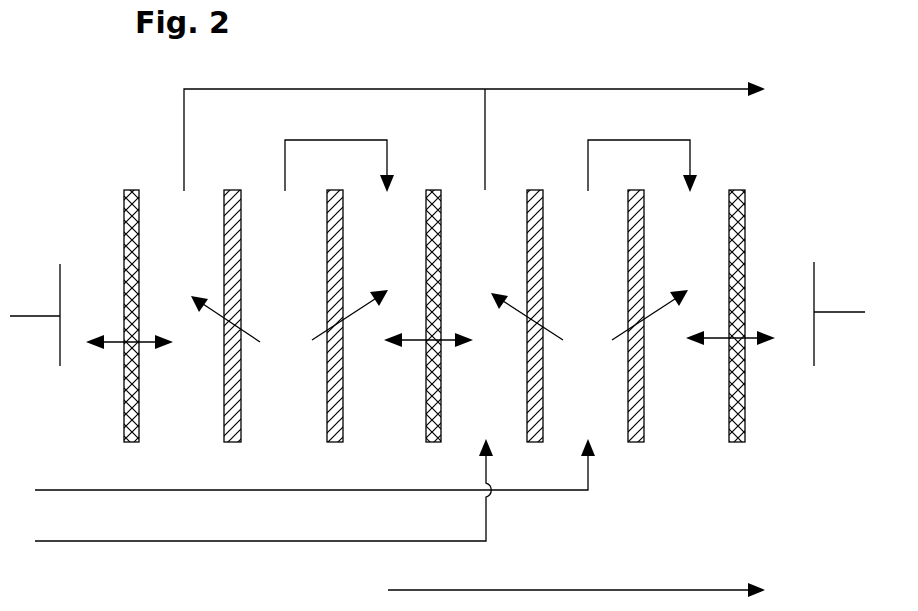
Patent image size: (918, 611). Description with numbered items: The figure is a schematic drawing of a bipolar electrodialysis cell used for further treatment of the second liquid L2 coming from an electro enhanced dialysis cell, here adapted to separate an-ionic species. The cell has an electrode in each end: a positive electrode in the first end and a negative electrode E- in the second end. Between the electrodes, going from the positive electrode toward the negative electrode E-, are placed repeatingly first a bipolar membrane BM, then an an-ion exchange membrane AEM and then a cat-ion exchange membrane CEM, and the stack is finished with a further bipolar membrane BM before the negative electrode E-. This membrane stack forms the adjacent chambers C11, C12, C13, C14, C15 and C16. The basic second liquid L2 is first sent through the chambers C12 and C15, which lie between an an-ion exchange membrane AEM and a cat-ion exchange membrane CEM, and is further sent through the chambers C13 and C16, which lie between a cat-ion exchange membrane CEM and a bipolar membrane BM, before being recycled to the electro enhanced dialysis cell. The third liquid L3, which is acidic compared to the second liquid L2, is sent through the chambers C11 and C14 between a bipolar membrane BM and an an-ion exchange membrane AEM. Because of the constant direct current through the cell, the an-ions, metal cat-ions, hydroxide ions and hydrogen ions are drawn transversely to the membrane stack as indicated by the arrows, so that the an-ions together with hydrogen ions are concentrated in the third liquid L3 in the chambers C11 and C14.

The bipolar membrane BM is at (433, 301).
The an-ion exchange membrane AEM is at (379, 301).
The cat-ion exchange membrane CEM is at (479, 301).
The negative electrode E- is at (827, 311).
The second liquid L2 is at (400, 518).
The third liquid L3 is at (400, 329).
The chamber C11 is at (185, 541).
The chamber C12 is at (287, 490).
The chamber C13 is at (388, 590).
The chamber C14 is at (514, 348).
The chamber C15 is at (631, 348).
The chamber C16 is at (689, 590).